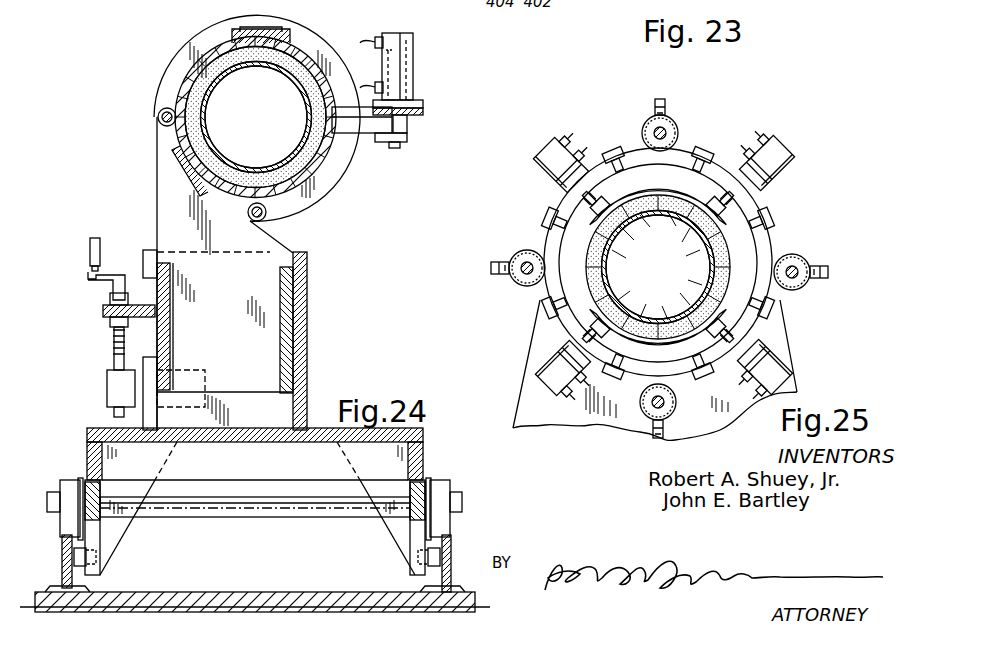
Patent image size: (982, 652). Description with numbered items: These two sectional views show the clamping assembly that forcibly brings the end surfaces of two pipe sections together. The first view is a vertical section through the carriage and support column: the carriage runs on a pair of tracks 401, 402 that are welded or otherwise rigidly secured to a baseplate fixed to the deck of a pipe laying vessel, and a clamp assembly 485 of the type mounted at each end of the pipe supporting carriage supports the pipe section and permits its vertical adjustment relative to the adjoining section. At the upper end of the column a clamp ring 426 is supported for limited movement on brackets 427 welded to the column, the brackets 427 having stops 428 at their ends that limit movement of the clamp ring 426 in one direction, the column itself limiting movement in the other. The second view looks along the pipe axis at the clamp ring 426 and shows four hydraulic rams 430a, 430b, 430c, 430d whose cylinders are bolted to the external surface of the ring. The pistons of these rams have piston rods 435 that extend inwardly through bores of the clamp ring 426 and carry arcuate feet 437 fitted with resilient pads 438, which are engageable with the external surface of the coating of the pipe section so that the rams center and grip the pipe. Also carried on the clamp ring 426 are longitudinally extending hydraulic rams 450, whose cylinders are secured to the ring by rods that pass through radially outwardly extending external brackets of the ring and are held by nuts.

In FIG. 24, the clamp assembly 485 is at (328, 258).
In FIG. 24, the track 401 is at (450, 572).
In FIG. 24, the track 402 is at (63, 576).
In FIG. 25, the clamp ring 426 is at (680, 158).
In FIG. 25, the brackets 427 is at (607, 134).
In FIG. 25, the stops 428 is at (618, 158).
In FIG. 25, the hydraulic ram 430a is at (757, 154).
In FIG. 25, the hydraulic ram 430b is at (786, 360).
In FIG. 25, the hydraulic ram 430c is at (545, 380).
In FIG. 25, the hydraulic ram 430d is at (553, 144).
In FIG. 25, the piston rods 435 is at (722, 216).
In FIG. 25, the arcuate feet 437 is at (704, 203).
In FIG. 25, the resilient pads 438 is at (645, 184).
In FIG. 25, the hydraulic rams 450 is at (676, 115).